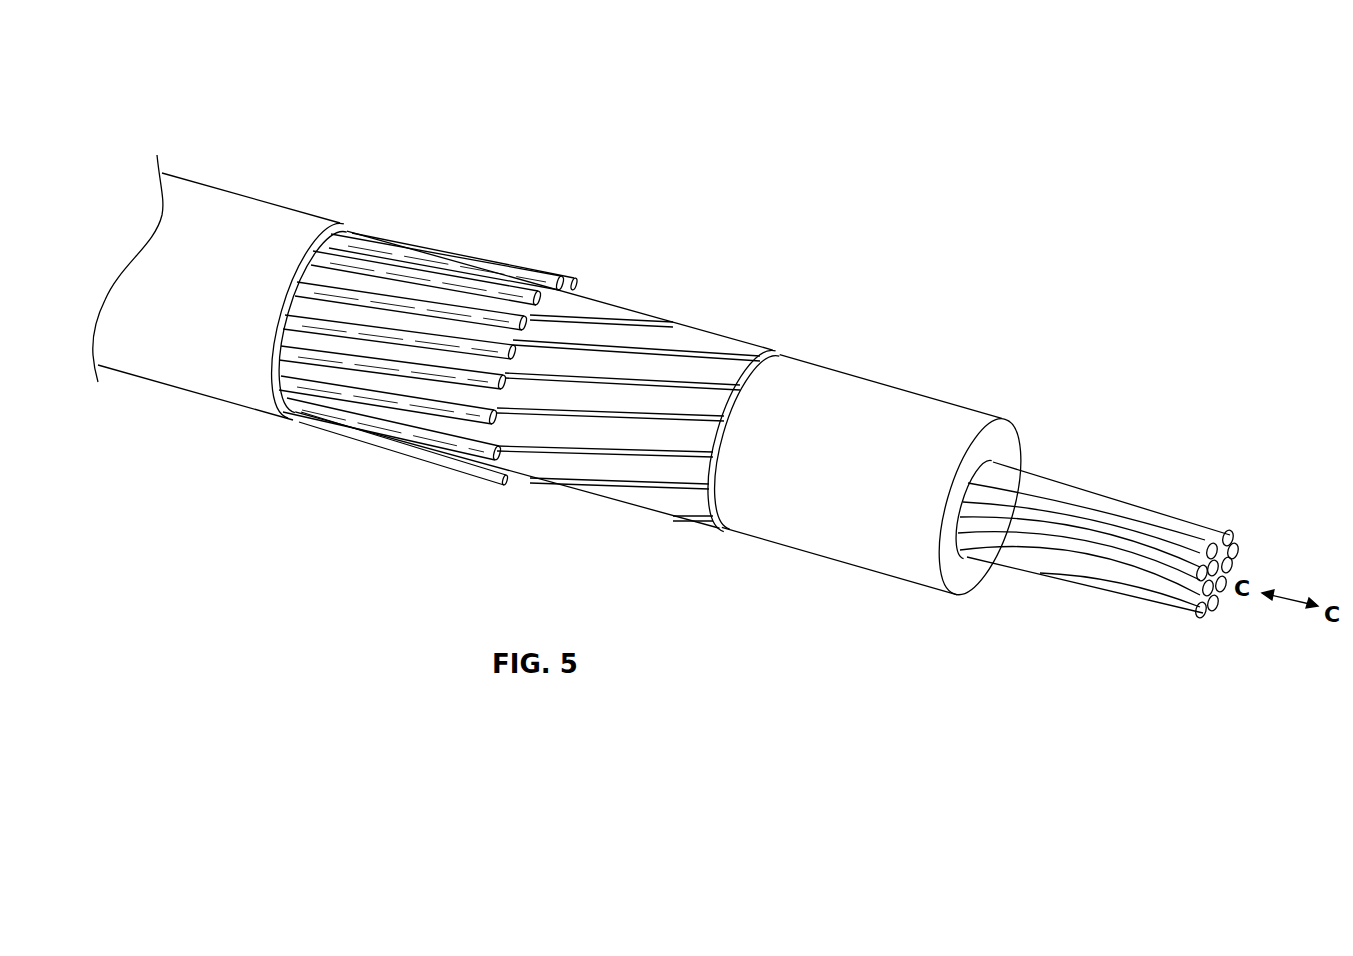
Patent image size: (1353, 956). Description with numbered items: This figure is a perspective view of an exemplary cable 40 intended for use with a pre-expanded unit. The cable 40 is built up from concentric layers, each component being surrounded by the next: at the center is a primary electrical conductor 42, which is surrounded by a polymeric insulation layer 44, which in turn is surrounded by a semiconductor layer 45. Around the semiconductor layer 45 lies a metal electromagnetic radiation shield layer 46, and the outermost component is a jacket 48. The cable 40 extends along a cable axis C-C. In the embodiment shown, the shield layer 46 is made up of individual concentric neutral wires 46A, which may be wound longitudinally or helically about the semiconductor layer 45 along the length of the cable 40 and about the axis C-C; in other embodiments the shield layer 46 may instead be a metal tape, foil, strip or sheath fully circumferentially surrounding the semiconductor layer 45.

The cable 40 is at (167, 97).
The jacket 48 is at (210, 203).
The metal electromagnetic radiation shield layer 46 is at (428, 301).
The concentric neutral wires 46A is at (350, 320).
The semiconductor layer 45 is at (695, 337).
The polymeric insulation layer 44 is at (870, 398).
The primary electrical conductor 42 is at (1083, 538).